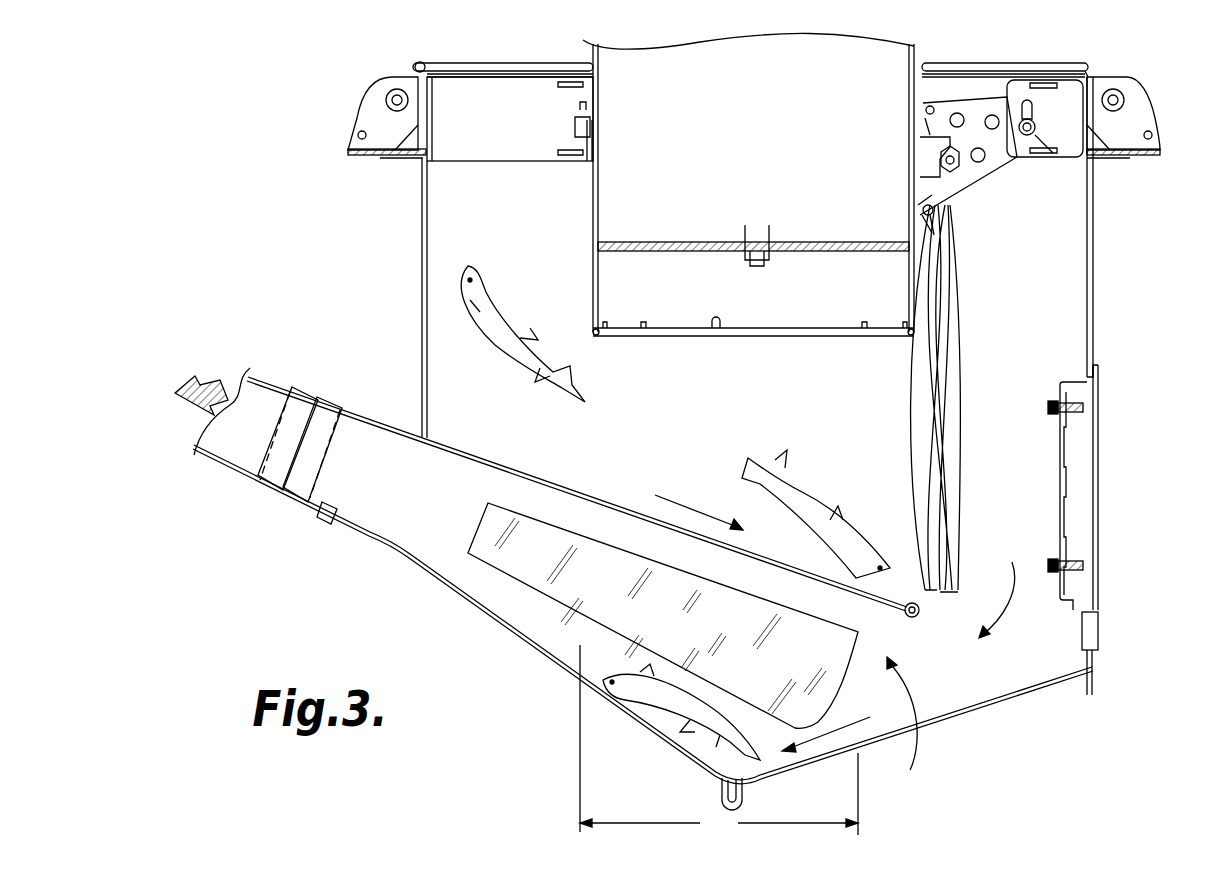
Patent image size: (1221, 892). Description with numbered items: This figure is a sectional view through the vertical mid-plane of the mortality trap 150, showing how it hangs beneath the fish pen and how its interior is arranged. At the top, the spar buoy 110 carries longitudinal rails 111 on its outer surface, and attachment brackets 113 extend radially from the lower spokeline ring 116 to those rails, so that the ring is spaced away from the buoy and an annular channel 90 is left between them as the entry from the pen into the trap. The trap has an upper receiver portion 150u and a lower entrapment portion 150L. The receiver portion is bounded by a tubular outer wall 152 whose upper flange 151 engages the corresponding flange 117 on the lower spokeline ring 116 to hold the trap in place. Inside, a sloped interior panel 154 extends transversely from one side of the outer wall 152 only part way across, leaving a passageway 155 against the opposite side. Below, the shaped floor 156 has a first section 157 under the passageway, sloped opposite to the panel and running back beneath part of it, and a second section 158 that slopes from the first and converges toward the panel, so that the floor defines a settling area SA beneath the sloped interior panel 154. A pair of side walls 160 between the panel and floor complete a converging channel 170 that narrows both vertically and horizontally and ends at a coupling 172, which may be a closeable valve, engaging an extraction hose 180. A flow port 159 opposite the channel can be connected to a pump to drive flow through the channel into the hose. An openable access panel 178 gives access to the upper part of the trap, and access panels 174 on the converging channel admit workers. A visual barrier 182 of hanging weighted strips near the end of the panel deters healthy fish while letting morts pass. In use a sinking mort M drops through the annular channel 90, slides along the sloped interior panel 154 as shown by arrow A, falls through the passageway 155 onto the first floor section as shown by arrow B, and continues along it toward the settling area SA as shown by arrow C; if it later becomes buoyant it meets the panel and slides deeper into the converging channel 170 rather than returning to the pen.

The annular channel 90 is at (510, 185).
The spar buoy 110 is at (947, 72).
The longitudinal rails 111 is at (918, 65).
The attachment brackets 113 is at (985, 172).
The lower spokeline ring 116 is at (1090, 94).
The flange 117 is at (1145, 123).
The mortality trap 150 is at (1126, 295).
The upper receiver portion 150u is at (1093, 236).
The lower entrapment portion 150L is at (1103, 614).
The upper flange 151 is at (1112, 162).
The tubular outer wall 152 is at (1092, 346).
The sloped interior panel 154 is at (582, 483).
The passageway 155 is at (905, 736).
The floor 156 is at (940, 740).
The first section 157 is at (1030, 695).
The second section 158 is at (660, 743).
The flow port 159 is at (1098, 627).
The side walls 160 is at (415, 528).
The converging channel 170 is at (504, 635).
The coupling 172 is at (298, 498).
The access panels 174 is at (582, 644).
The openable access panel 178 is at (1085, 508).
The extraction hose 180 is at (270, 378).
The visual barrier 182 is at (957, 361).
The arrow A is at (704, 505).
The arrow B is at (1000, 586).
The arrow C is at (849, 720).
The mort M is at (490, 288).
The settling area SA is at (719, 740).